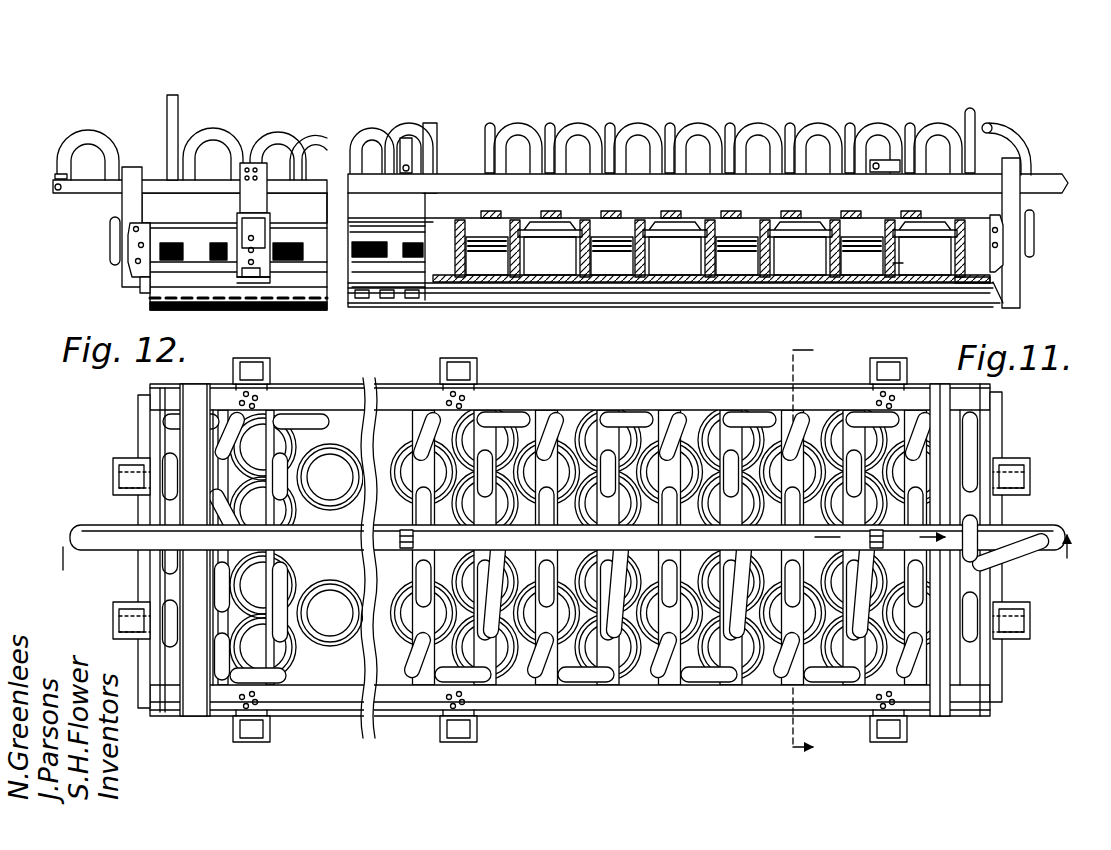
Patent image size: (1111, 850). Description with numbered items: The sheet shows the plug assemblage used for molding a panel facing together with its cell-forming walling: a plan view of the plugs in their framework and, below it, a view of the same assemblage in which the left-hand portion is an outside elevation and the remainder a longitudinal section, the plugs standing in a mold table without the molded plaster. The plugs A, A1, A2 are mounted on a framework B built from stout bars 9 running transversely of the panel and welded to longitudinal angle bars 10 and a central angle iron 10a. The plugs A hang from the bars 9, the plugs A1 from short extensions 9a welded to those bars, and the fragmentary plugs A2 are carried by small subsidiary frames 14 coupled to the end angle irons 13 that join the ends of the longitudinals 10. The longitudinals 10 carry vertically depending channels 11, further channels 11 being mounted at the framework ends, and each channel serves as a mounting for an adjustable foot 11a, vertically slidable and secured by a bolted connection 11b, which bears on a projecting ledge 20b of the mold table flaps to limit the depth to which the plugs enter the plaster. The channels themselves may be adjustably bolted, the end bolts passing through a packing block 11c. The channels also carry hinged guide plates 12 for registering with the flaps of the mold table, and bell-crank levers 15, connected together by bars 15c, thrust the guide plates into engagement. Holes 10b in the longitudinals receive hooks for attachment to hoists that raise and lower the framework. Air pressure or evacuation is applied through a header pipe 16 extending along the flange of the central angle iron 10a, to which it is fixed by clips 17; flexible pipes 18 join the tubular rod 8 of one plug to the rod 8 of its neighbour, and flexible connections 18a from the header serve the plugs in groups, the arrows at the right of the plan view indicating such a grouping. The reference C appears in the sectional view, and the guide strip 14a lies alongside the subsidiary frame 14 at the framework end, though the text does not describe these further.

In FIG. 12, the tubular rod 8 is at (727, 167).
In FIG. 12, the stout bar 9 is at (727, 214).
In FIG. 11, the short extension 9a is at (650, 418).
In FIG. 12, the longitudinal angle bar 10 is at (281, 217).
In FIG. 11, the longitudinal angle bar 10 is at (407, 392).
In FIG. 12, the central angle iron 10a is at (440, 217).
In FIG. 11, the central angle iron 10a is at (310, 488).
In FIG. 11, the holes 10b is at (825, 384).
In FIG. 12, the channel 11 is at (135, 168).
In FIG. 11, the channel 11 is at (233, 366).
In FIG. 12, the adjustable foot 11a is at (252, 272).
In FIG. 11, the adjustable foot 11a is at (458, 731).
In FIG. 12, the bolted connection 11b is at (254, 278).
In FIG. 12, the packing block 11c is at (142, 207).
In FIG. 11, the packing block 11c is at (1007, 455).
In FIG. 12, the guide member 12 is at (1000, 243).
In FIG. 11, the guide member 12 is at (562, 563).
In FIG. 12, the angle iron 13 is at (913, 211).
In FIG. 11, the angle iron 13 is at (930, 388).
In FIG. 12, the subsidiary frame 14 is at (163, 217).
In FIG. 11, the subsidiary frame 14 is at (950, 395).
In FIG. 11, the end member guide 14a is at (977, 655).
In FIG. 12, the bell-crank lever 15 is at (142, 246).
In FIG. 12, the bar 15c is at (268, 168).
In FIG. 12, the header pipe 16 is at (460, 180).
In FIG. 11, the header pipe 16 is at (130, 535).
In FIG. 12, the clip 17 is at (405, 165).
In FIG. 11, the clip 17 is at (405, 546).
In FIG. 12, the flexible pipe 18 is at (530, 130).
In FIG. 11, the flexible pipe 18 is at (530, 410).
In FIG. 12, the flexible connection 18a is at (490, 124).
In FIG. 11, the flexible connection 18a is at (420, 535).
In FIG. 12, the projecting ledge 20b is at (145, 291).
In FIG. 12, the plug A is at (897, 264).
In FIG. 11, the plug A is at (672, 408).
In FIG. 11, the plug A1 is at (572, 410).
In FIG. 12, the fragmentary plug A2 is at (967, 274).
In FIG. 11, the fragmentary plug A2 is at (937, 676).
In FIG. 12, the framework B is at (744, 184).
In FIG. 11, the framework B is at (370, 378).
In FIG. 12, the direction C is at (471, 309).